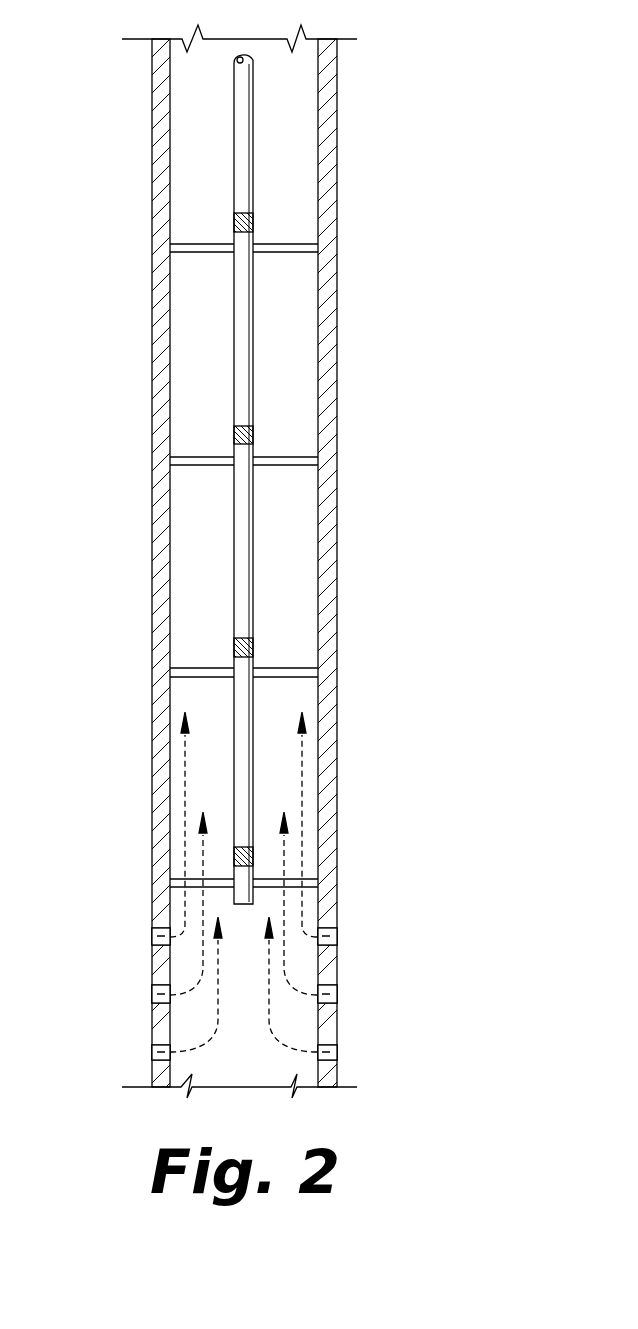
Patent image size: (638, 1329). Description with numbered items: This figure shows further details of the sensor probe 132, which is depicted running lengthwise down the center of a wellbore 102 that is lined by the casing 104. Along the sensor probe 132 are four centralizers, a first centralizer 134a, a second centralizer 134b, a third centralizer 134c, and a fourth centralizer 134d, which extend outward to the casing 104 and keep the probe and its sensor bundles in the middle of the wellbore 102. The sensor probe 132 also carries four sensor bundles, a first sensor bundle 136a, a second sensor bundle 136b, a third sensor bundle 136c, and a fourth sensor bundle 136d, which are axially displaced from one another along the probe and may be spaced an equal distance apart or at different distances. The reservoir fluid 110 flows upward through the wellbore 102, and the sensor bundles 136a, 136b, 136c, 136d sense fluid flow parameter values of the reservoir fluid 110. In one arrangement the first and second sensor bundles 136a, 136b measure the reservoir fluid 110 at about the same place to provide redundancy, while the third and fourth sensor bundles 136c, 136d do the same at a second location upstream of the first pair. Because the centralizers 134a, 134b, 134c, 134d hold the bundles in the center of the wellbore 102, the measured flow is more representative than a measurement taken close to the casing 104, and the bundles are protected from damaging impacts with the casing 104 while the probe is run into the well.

The wellbore 102 is at (205, 128).
The casing 104 is at (328, 128).
The reservoir fluid 110 is at (303, 775).
The sensor probe 132 is at (241, 339).
The first centralizer 134a is at (198, 244).
The second centralizer 134b is at (199, 457).
The third centralizer 134c is at (199, 668).
The fourth centralizer 134d is at (218, 879).
The first sensor bundle 136a is at (250, 226).
The second sensor bundle 136b is at (250, 434).
The third sensor bundle 136c is at (250, 648).
The fourth sensor bundle 136d is at (250, 858).